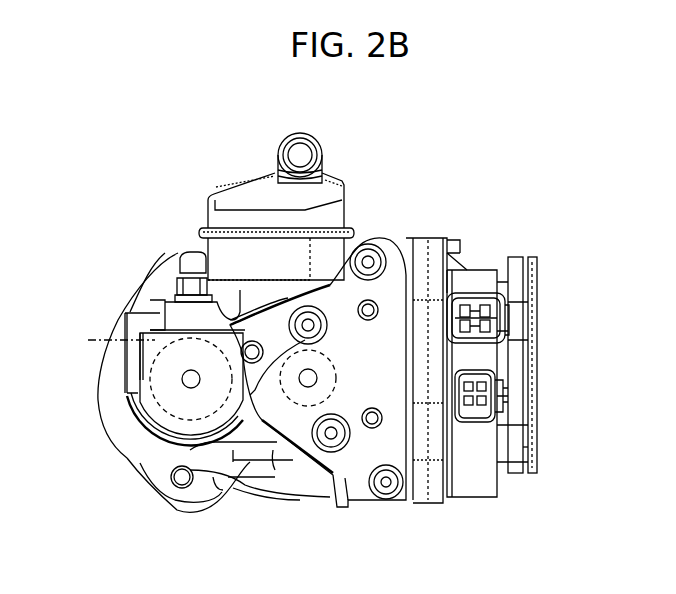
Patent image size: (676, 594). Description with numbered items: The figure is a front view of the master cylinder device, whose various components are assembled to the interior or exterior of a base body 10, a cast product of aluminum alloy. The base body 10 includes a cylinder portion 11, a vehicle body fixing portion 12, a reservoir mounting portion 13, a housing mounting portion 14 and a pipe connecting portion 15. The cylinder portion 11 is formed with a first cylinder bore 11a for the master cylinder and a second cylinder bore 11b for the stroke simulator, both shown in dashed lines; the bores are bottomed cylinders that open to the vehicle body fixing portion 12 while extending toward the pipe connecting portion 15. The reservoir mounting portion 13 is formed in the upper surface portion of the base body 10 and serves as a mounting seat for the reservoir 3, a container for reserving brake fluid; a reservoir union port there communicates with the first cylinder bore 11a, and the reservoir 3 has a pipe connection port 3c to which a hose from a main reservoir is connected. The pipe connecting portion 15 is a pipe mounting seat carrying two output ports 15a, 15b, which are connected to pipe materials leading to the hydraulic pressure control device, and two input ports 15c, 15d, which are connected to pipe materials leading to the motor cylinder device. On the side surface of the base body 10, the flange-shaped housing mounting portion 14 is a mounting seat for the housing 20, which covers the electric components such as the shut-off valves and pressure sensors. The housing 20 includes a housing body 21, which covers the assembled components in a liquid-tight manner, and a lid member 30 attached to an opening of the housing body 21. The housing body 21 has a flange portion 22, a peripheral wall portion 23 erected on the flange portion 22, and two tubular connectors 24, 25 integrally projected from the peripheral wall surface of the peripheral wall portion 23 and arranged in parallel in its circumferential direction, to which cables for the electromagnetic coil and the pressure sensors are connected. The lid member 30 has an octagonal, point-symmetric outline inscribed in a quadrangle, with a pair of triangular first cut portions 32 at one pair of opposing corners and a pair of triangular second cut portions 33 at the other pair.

The base body 10 is at (95, 230).
The reservoir 3 is at (233, 182).
The pipe connection port 3c is at (296, 140).
The reservoir mounting portion 13 is at (263, 300).
The vehicle body fixing portion 12 is at (166, 260).
The cylinder portion 11 is at (127, 448).
The first cylinder bore 11a is at (305, 388).
The second cylinder bore 11b is at (108, 340).
The pipe connecting portion 15 is at (271, 455).
The output port 15a is at (252, 364).
The output port 15b is at (347, 467).
The input port 15c is at (370, 255).
The input port 15d is at (400, 513).
The housing mounting portion 14 is at (405, 240).
The housing 20 is at (528, 217).
The housing body 21 is at (471, 252).
The flange portion 22 is at (430, 492).
The peripheral wall portion 23 is at (477, 480).
The connector 24 is at (510, 347).
The connector 25 is at (492, 374).
The lid member 30 is at (535, 282).
The first cut portion 32 is at (537, 446).
The second cut portion 33 is at (536, 240).